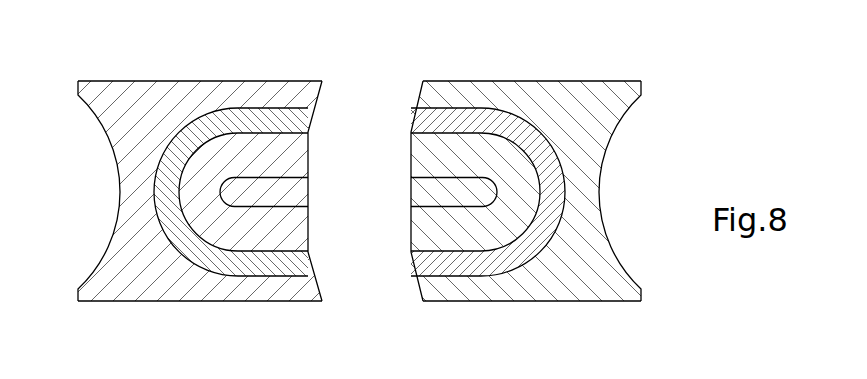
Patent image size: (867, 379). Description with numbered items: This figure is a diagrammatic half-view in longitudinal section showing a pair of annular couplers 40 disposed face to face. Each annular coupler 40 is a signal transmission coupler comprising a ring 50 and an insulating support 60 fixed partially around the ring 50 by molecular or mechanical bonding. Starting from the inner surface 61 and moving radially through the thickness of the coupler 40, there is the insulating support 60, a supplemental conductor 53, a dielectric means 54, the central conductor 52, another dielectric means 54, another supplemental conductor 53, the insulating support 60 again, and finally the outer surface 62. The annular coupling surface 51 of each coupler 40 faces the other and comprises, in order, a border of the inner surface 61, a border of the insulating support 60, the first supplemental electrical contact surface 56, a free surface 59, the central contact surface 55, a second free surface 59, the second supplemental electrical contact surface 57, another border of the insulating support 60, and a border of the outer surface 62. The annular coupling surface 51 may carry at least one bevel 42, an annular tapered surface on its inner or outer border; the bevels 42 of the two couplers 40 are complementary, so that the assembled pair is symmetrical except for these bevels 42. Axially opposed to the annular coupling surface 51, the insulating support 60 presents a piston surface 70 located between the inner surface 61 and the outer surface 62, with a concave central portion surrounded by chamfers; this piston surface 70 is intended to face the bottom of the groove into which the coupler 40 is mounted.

The annular coupler 40 is at (82, 267).
The bevel 42 is at (420, 290).
The ring 50 is at (255, 283).
The annular coupling surface 51 is at (323, 92).
The central conductor 52 is at (280, 190).
The supplemental conductor 53 is at (163, 190).
The dielectric means 54 is at (258, 167).
The central contact surface 55 is at (310, 199).
The first supplemental electrical contact surface 56 is at (310, 127).
The second supplemental electrical contact surface 57 is at (310, 262).
The free surface 59 is at (310, 160).
The insulating support 60 is at (95, 293).
The inner surface 61 is at (172, 81).
The outer surface 62 is at (138, 302).
The piston surface 70 is at (116, 222).